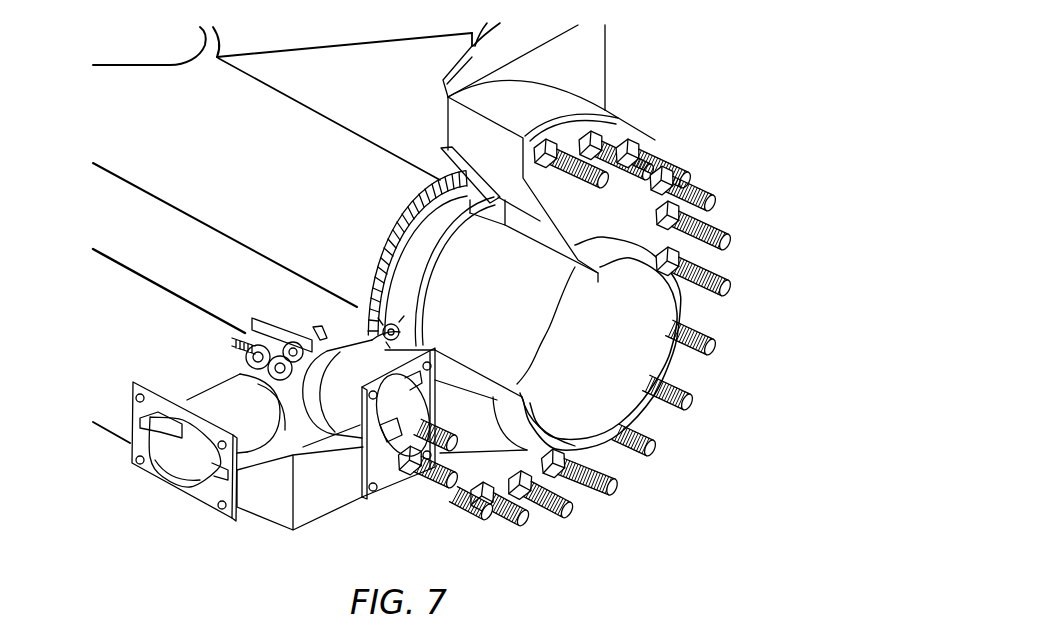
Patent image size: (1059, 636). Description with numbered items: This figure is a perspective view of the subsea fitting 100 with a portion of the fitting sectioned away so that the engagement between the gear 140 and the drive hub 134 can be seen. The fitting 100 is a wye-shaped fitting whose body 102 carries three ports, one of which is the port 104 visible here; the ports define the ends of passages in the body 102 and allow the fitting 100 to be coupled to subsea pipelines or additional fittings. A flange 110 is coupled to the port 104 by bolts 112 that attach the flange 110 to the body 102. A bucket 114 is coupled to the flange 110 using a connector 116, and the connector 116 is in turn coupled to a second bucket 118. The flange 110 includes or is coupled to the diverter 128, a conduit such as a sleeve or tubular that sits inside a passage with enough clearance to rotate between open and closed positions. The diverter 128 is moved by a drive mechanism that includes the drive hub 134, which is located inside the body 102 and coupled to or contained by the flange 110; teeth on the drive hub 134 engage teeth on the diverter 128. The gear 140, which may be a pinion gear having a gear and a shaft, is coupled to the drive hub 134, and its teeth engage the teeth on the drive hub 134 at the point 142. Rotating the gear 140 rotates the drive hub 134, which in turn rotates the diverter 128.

The fitting 100 is at (664, 70).
The body 102 is at (593, 68).
The port 104 is at (618, 369).
The flange 110 is at (547, 113).
The bolts 112 is at (608, 488).
The bucket 114 is at (162, 482).
The connector 116 is at (268, 323).
The bucket 118 is at (373, 495).
The diverter 128 is at (248, 162).
The drive hub 134 is at (448, 267).
The gear 140 is at (357, 345).
The point 142 is at (405, 311).